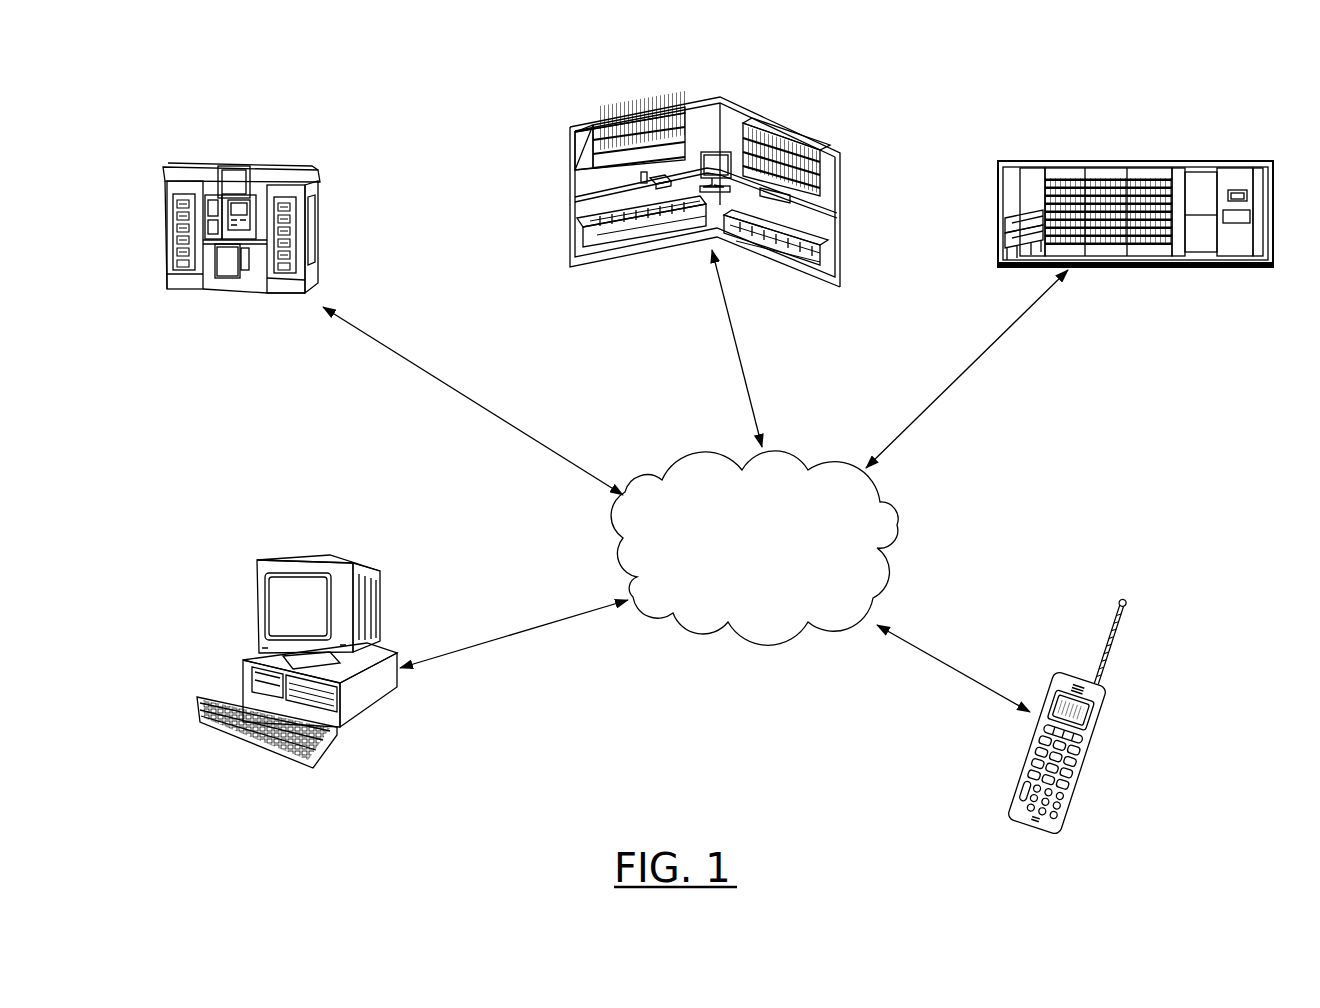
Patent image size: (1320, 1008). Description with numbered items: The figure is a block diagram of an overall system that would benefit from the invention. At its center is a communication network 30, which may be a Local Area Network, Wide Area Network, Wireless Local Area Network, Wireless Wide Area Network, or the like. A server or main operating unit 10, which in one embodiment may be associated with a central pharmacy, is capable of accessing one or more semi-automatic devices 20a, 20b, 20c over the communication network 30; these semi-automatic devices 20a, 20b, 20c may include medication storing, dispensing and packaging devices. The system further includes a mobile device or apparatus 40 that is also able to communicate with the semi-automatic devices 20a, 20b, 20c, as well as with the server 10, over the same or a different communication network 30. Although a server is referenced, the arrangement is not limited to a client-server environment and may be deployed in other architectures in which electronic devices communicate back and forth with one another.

The server or main operating unit 10 is at (380, 597).
The semi-automatic device 20a is at (276, 168).
The semi-automatic device 20b is at (622, 117).
The semi-automatic device 20c is at (1180, 162).
The communication network 30 is at (897, 523).
The mobile device or apparatus 40 is at (1097, 742).